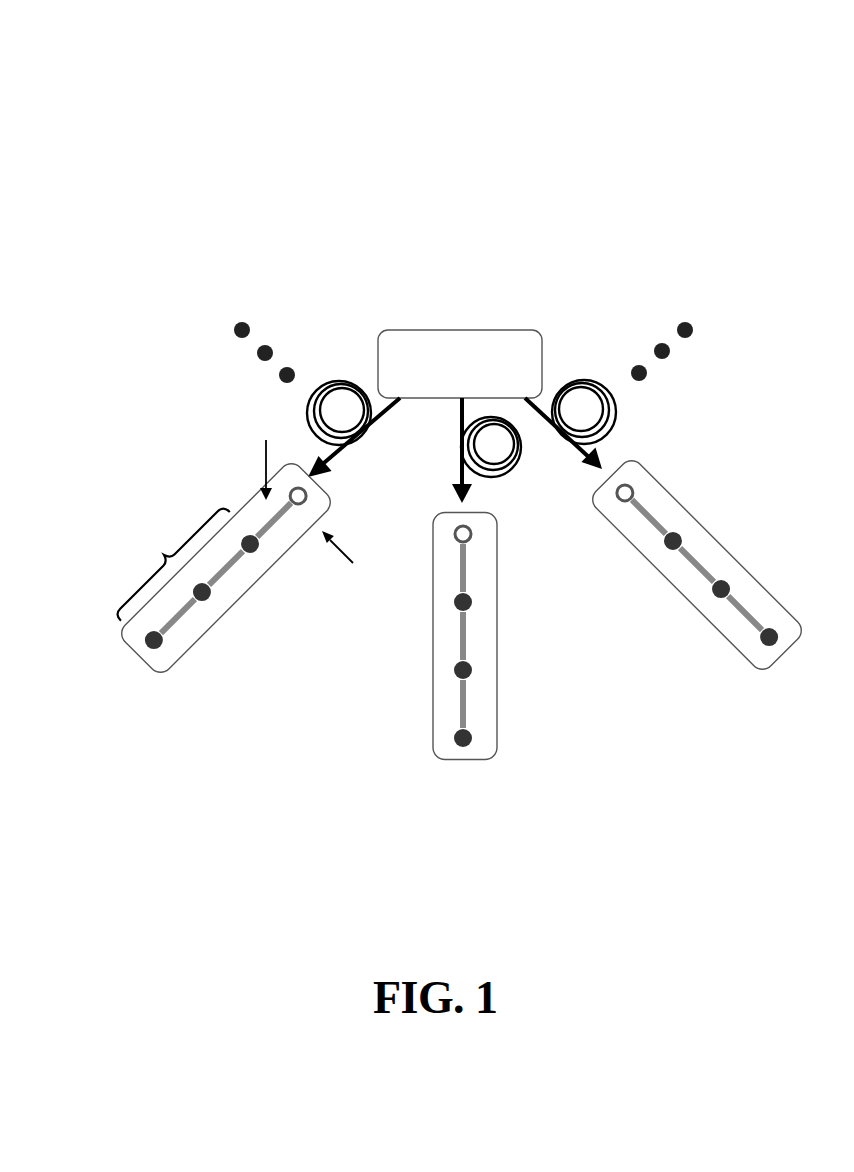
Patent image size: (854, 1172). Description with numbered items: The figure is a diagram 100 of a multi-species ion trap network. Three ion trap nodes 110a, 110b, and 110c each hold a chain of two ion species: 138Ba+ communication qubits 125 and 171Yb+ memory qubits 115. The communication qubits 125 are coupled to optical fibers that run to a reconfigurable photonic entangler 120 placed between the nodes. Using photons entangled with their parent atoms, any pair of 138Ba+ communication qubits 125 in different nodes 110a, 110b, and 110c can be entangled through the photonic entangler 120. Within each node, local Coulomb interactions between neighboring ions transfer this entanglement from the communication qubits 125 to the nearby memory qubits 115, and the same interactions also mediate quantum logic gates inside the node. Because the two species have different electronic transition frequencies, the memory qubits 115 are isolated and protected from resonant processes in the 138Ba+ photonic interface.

The diagram 100 is at (665, 70).
The node 110a is at (222, 608).
The node 110b is at (435, 757).
The node 110c is at (758, 672).
The memory qubits 115 is at (138, 517).
The reconfigurable photonic entangler 120 is at (462, 330).
The communication qubits 125 is at (262, 713).